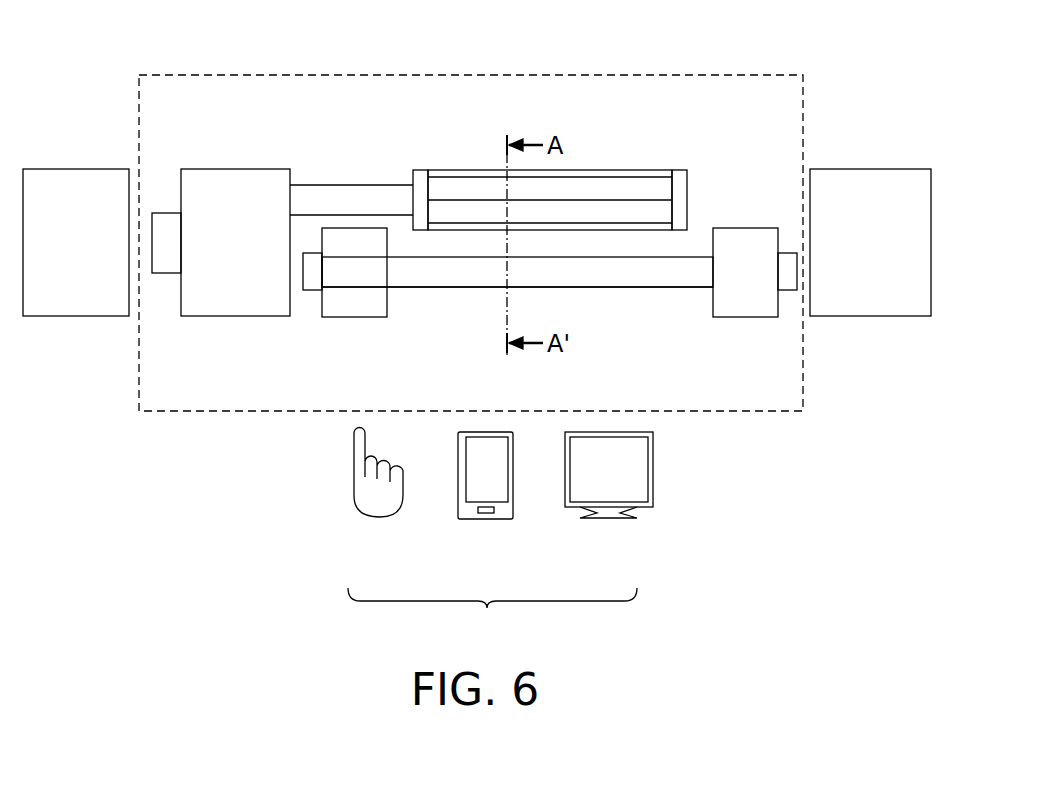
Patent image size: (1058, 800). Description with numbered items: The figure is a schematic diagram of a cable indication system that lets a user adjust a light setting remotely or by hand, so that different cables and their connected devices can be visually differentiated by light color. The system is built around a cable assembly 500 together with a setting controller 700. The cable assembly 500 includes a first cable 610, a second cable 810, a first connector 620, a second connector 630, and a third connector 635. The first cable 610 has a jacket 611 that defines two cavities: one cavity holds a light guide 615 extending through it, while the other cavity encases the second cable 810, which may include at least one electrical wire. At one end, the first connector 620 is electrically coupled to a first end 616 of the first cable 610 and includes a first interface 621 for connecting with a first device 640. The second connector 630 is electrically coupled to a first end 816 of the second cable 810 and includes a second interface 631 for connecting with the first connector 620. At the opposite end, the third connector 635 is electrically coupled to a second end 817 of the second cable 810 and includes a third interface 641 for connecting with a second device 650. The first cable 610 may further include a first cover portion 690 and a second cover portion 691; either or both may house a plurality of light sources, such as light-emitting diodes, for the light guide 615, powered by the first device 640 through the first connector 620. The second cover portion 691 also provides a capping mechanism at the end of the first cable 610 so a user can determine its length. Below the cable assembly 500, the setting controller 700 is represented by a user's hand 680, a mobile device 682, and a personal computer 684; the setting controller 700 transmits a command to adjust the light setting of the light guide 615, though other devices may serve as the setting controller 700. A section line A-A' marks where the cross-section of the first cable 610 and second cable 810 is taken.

The cable assembly 500 is at (477, 75).
The first cable 610 is at (585, 170).
The jacket 611 is at (476, 170).
The light guide 615 is at (640, 185).
The first end of the first cable 616 is at (355, 185).
The first connector 620 is at (236, 169).
The first interface 621 is at (170, 213).
The second connector 630 is at (365, 317).
The second interface 631 is at (312, 290).
The third connector 635 is at (745, 228).
The first device 640 is at (77, 169).
The third interface 641 is at (792, 290).
The second device 650 is at (872, 169).
The user's hand 680 is at (378, 517).
The mobile device 682 is at (485, 519).
The personal computer 684 is at (608, 518).
The first cover portion 690 is at (422, 178).
The second cover portion 691 is at (680, 178).
The setting controller 700 is at (492, 616).
The second cable 810 is at (597, 287).
The first end of the second cable 816 is at (425, 287).
The second end of the second cable 817 is at (678, 287).